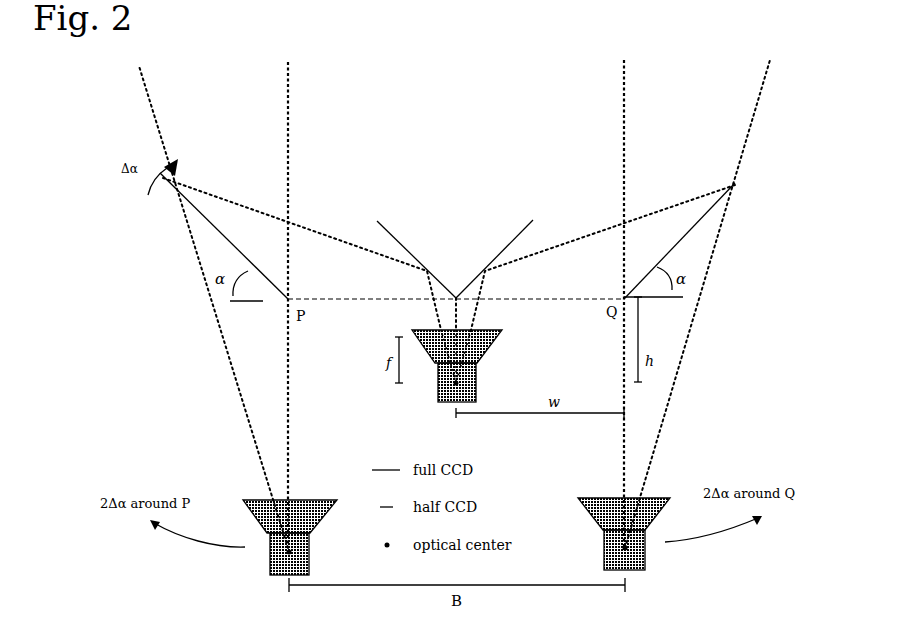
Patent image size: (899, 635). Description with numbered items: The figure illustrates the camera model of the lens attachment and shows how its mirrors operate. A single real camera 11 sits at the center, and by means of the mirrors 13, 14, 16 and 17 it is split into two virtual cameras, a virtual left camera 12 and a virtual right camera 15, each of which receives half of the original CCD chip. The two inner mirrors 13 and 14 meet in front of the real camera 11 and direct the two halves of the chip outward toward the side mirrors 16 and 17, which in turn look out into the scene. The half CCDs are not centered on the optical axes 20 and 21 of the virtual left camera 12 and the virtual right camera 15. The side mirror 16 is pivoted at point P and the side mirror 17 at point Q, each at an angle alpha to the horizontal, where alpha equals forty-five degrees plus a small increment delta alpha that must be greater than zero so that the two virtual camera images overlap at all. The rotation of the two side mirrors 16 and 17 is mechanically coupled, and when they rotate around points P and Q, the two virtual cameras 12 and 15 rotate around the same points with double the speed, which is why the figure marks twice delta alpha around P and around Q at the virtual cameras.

The single real camera 11 is at (438, 395).
The virtual left camera 12 is at (270, 555).
The mirror 13 is at (410, 245).
The mirror 14 is at (500, 245).
The virtual right camera 15 is at (647, 555).
The side mirror 16 is at (233, 247).
The side mirror 17 is at (678, 240).
The optical axis 20 is at (310, 558).
The optical axis 21 is at (604, 550).